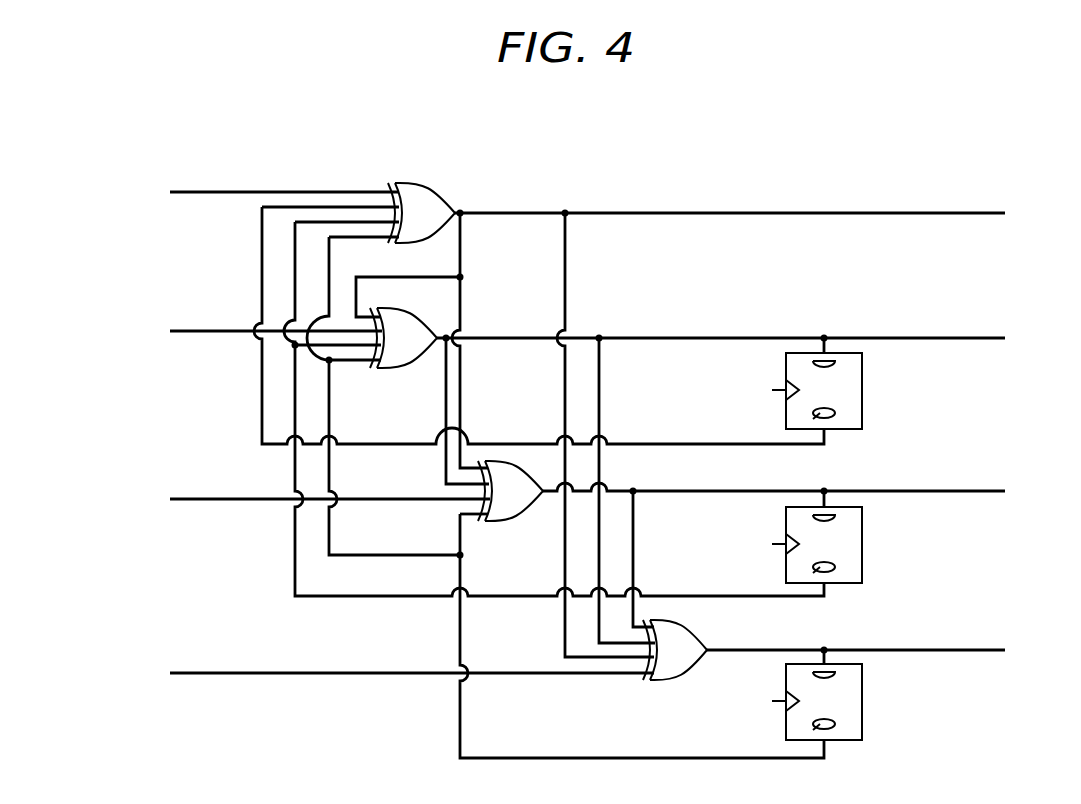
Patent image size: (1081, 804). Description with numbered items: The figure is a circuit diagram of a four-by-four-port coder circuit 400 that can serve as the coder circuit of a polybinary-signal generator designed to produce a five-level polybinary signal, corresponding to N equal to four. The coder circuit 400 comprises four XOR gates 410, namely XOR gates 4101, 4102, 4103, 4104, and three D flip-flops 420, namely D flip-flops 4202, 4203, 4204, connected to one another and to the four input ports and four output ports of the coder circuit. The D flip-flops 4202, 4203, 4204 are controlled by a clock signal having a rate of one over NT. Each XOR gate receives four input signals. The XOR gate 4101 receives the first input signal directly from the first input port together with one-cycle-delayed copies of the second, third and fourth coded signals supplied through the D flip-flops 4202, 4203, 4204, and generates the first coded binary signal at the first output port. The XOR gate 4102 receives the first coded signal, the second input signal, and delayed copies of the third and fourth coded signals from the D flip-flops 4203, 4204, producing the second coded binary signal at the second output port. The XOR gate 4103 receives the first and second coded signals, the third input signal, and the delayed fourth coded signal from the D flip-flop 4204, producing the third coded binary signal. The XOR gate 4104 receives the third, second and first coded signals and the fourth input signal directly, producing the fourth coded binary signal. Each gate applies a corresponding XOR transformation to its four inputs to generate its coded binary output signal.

The coder circuit 400 is at (582, 109).
The XOR gates 410 is at (538, 454).
The XOR gate 4101 is at (423, 192).
The XOR gate 4102 is at (395, 368).
The XOR gate 4103 is at (507, 522).
The XOR gate 4104 is at (673, 681).
The D flip-flops 420 is at (834, 546).
The D flip-flop 4202 is at (862, 389).
The D flip-flop 4203 is at (862, 543).
The D flip-flop 4204 is at (862, 700).